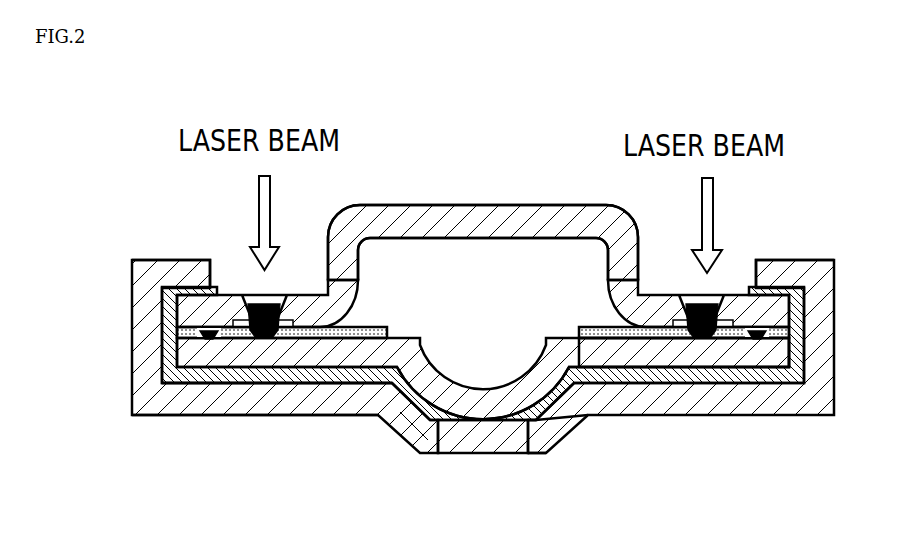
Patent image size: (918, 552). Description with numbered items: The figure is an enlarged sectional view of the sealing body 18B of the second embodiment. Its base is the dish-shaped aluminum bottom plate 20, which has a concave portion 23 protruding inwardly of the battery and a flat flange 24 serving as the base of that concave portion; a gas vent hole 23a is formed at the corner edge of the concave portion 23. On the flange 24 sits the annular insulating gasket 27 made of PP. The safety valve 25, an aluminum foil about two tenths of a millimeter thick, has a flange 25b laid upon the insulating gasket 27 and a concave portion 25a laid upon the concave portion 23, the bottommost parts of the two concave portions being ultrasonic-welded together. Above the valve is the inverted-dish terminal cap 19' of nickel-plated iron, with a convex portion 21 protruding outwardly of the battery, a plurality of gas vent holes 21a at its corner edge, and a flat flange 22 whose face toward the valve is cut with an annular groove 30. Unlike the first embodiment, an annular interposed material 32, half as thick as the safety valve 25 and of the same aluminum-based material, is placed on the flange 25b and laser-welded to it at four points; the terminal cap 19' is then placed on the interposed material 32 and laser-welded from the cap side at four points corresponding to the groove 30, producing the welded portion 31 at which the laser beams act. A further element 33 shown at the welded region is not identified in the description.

The sealing body 18B is at (812, 127).
The terminal cap 19' is at (483, 189).
The bottom plate 20 is at (788, 431).
The convex portion 21 is at (440, 215).
The gas vent holes 21a is at (350, 259).
The flange 22 is at (228, 303).
The concave portion 23 is at (485, 434).
The gas vent hole 23a is at (552, 433).
The flange 24 is at (208, 417).
The safety valve 25 is at (410, 411).
The concave portion 25a is at (430, 433).
The flange 25b is at (267, 358).
The insulating gasket 27 is at (870, 338).
The annular groove 30 is at (657, 356).
The welded portion 31 is at (712, 340).
The interposed material 32 is at (370, 325).
The solder 33 is at (203, 342).